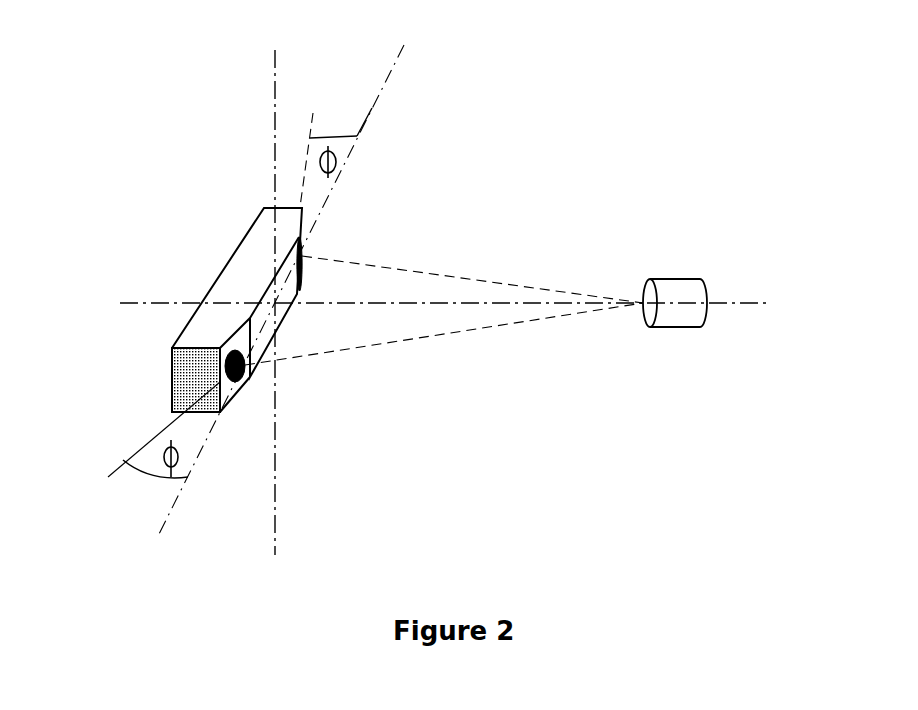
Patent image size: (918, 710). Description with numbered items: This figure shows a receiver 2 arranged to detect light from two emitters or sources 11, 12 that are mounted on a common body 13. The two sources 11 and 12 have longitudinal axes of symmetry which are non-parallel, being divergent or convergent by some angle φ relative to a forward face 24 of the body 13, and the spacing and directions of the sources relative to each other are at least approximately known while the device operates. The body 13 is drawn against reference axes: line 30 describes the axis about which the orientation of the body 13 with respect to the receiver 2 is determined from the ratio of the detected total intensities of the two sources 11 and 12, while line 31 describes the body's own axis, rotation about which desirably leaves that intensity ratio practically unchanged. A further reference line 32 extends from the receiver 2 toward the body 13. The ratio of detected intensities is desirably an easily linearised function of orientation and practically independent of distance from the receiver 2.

The receiver 2 is at (683, 317).
The emitter 11 is at (302, 252).
The emitter 12 is at (250, 377).
The common body 13 is at (225, 268).
The forward face 24 is at (268, 300).
The line 30 is at (273, 112).
The line 31 is at (372, 110).
The horizontal optical axis 32 is at (737, 302).